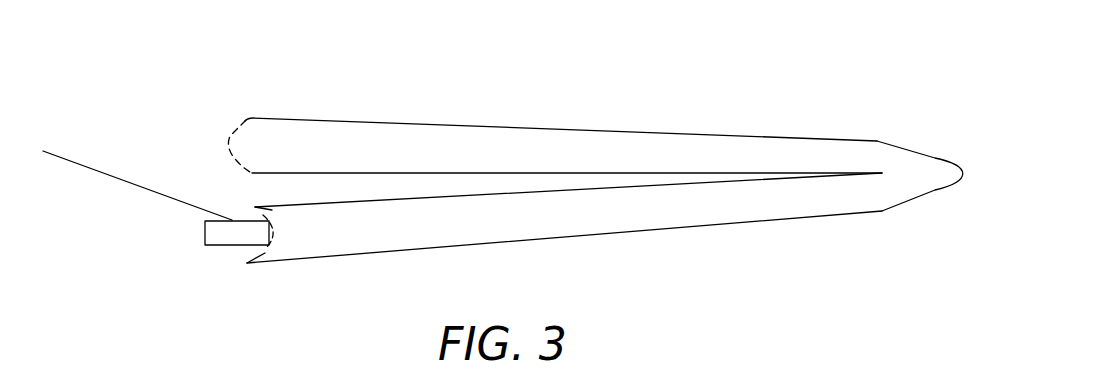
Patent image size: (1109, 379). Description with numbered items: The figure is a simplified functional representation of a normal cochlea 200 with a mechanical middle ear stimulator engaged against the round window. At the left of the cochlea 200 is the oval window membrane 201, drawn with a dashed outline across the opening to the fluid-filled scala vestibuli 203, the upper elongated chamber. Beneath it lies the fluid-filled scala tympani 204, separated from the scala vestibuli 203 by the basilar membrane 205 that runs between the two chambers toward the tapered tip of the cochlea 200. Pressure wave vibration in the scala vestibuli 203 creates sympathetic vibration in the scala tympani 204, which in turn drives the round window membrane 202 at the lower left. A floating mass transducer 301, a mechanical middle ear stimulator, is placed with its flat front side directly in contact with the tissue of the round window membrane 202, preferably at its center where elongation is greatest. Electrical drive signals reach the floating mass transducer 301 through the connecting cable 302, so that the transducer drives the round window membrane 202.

The cochlea 200 is at (746, 60).
The oval window membrane 201 is at (227, 137).
The round window membrane 202 is at (264, 254).
The scala vestibuli 203 is at (472, 135).
The scala tympani 204 is at (473, 233).
The basilar membrane 205 is at (590, 182).
The floating mass transducer 301 is at (218, 246).
The connecting cable 302 is at (127, 181).